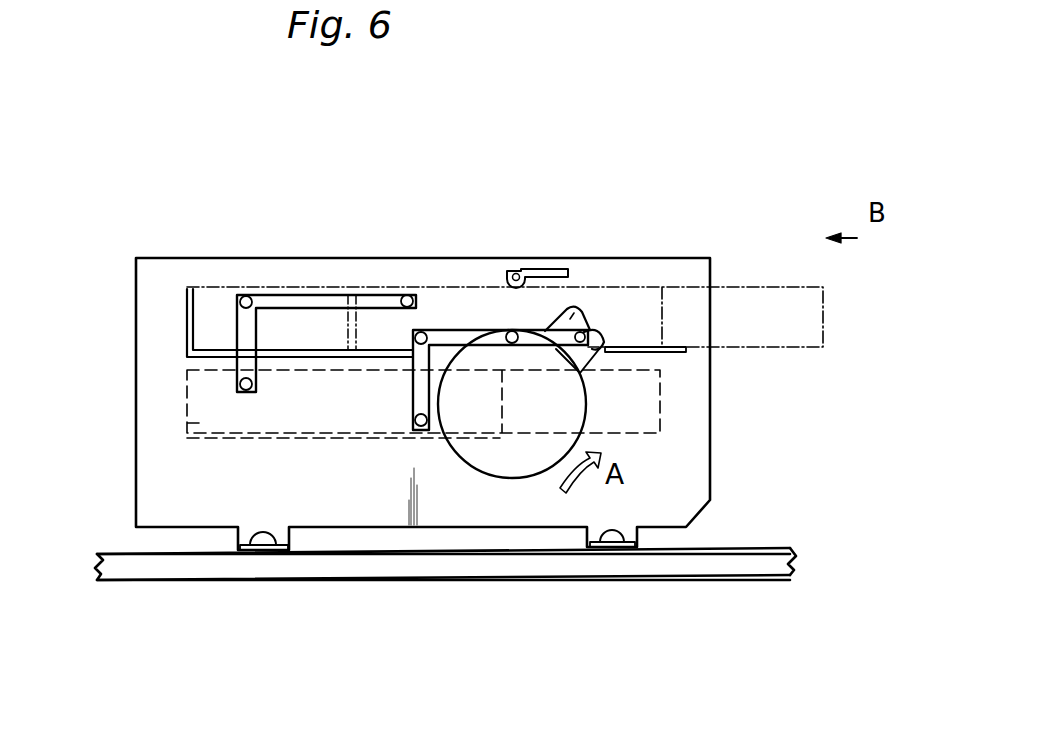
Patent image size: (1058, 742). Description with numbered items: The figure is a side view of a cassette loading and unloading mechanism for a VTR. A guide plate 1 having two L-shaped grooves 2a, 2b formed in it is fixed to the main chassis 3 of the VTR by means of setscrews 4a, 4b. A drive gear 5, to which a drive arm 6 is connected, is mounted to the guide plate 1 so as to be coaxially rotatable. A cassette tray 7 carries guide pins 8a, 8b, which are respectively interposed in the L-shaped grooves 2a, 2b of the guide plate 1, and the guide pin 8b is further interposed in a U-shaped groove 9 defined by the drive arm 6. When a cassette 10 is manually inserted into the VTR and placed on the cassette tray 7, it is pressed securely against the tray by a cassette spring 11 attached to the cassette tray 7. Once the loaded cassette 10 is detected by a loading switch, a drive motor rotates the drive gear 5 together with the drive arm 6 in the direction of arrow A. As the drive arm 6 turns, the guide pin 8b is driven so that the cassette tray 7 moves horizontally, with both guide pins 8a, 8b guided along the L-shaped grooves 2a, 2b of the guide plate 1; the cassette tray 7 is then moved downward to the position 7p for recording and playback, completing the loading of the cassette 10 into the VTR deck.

The guide plate 1 is at (158, 283).
The L-shaped groove 2a is at (300, 297).
The L-shaped groove 2b is at (458, 336).
The main chassis 3 is at (190, 567).
The setscrew 4a is at (265, 546).
The setscrew 4b is at (607, 541).
The drive gear 5 is at (492, 460).
The drive arm 6 is at (575, 311).
The cassette tray 7 is at (668, 352).
The position for recording and playback 7p is at (187, 425).
The guide pin 8a is at (399, 293).
The guide pin 8b is at (585, 333).
The U-shaped groove 9 is at (604, 333).
The cassette 10 is at (773, 332).
The cassette spring 11 is at (515, 272).